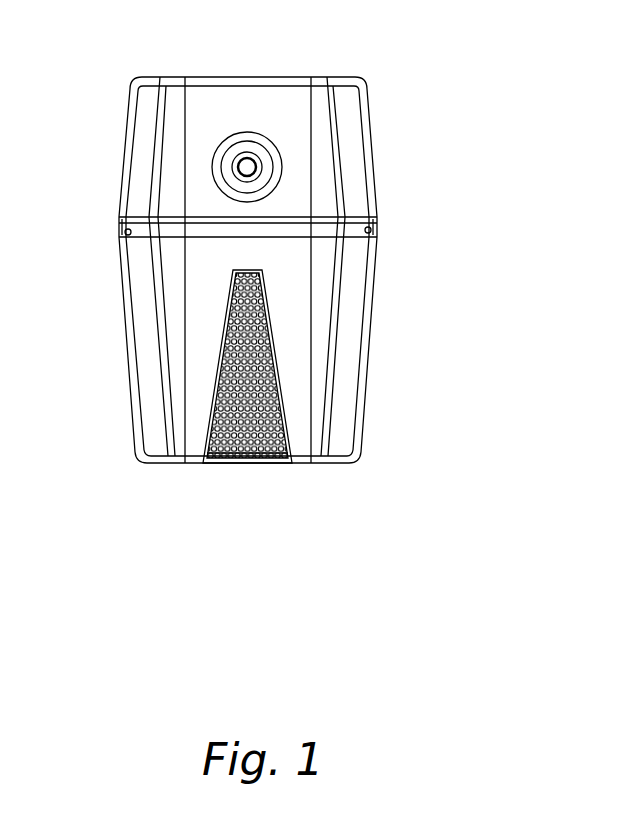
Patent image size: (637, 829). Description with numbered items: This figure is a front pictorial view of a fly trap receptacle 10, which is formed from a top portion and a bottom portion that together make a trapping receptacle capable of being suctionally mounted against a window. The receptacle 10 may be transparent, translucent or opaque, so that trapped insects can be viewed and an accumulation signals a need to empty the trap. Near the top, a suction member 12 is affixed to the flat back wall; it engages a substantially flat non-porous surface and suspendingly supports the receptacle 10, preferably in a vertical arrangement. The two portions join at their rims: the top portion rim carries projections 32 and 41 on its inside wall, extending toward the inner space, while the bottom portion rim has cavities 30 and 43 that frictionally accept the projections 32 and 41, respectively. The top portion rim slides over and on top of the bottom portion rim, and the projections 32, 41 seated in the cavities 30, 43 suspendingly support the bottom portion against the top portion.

The fly trap receptacle 10 is at (453, 213).
The suction member 12 is at (273, 132).
The cavity 30 is at (377, 230).
The projection 32 is at (377, 218).
The projection 41 is at (120, 220).
The cavity 43 is at (120, 234).